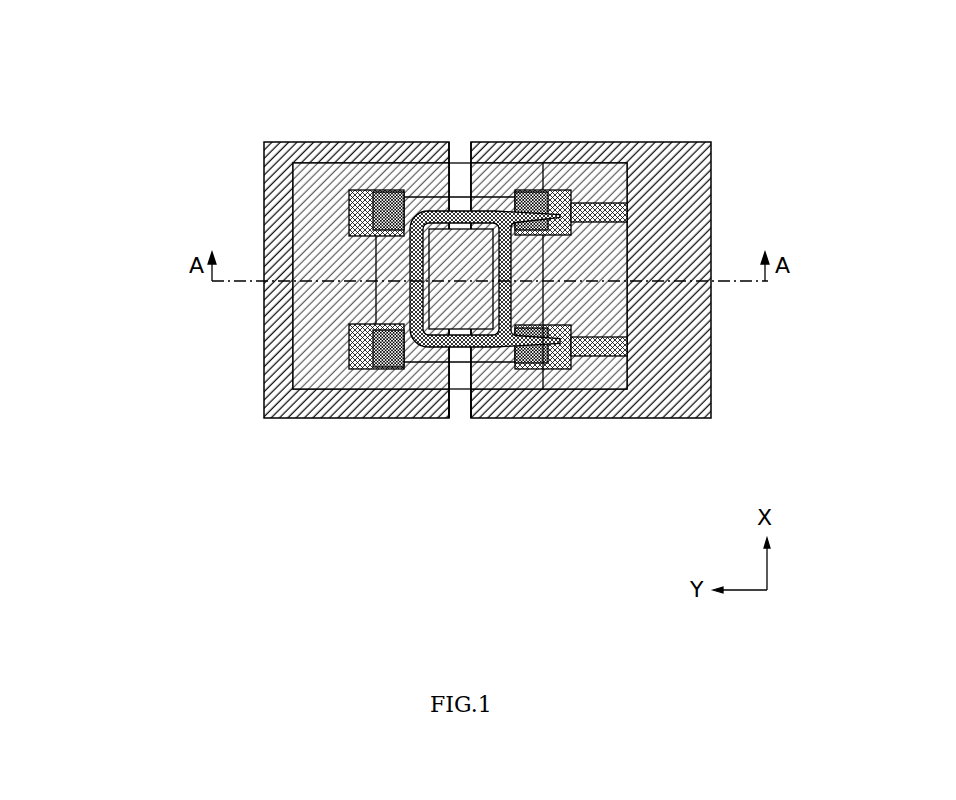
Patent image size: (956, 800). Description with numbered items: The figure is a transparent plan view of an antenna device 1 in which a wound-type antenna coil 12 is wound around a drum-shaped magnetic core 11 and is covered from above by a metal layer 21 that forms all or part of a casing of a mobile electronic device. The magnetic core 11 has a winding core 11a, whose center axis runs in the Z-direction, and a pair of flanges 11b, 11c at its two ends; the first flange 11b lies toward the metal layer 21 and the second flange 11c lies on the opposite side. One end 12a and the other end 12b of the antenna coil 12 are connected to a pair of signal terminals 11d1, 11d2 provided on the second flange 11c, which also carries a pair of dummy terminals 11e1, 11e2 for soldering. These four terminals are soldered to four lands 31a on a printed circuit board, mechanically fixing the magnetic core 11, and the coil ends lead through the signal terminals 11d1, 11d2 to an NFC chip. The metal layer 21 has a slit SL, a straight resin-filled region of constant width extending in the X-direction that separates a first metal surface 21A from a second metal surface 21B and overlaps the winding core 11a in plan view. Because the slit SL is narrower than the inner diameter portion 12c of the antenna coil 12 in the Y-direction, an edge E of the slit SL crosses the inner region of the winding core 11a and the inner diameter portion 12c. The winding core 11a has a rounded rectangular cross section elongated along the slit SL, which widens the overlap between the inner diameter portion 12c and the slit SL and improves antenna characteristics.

The antenna device 1 is at (495, 46).
The magnetic core 11 is at (253, 330).
The winding core 11a is at (410, 288).
The first flange 11b is at (278, 348).
The second flange 11c is at (352, 326).
The signal terminal 11d1 is at (545, 190).
The signal terminal 11d2 is at (527, 370).
The dummy terminal 11e1 is at (378, 190).
The dummy terminal 11e2 is at (275, 390).
The antenna coil 12 is at (356, 211).
The one end of the antenna coil 12a is at (612, 182).
The other end of the antenna coil 12b is at (590, 350).
The inner diameter portion 12c is at (483, 237).
The metal layer 21 is at (487, 326).
The first metal surface 21A is at (448, 424).
The second metal surface 21B is at (711, 424).
The land 31a is at (350, 188).
The slit SL is at (460, 155).
The edge of the slit E is at (467, 428).